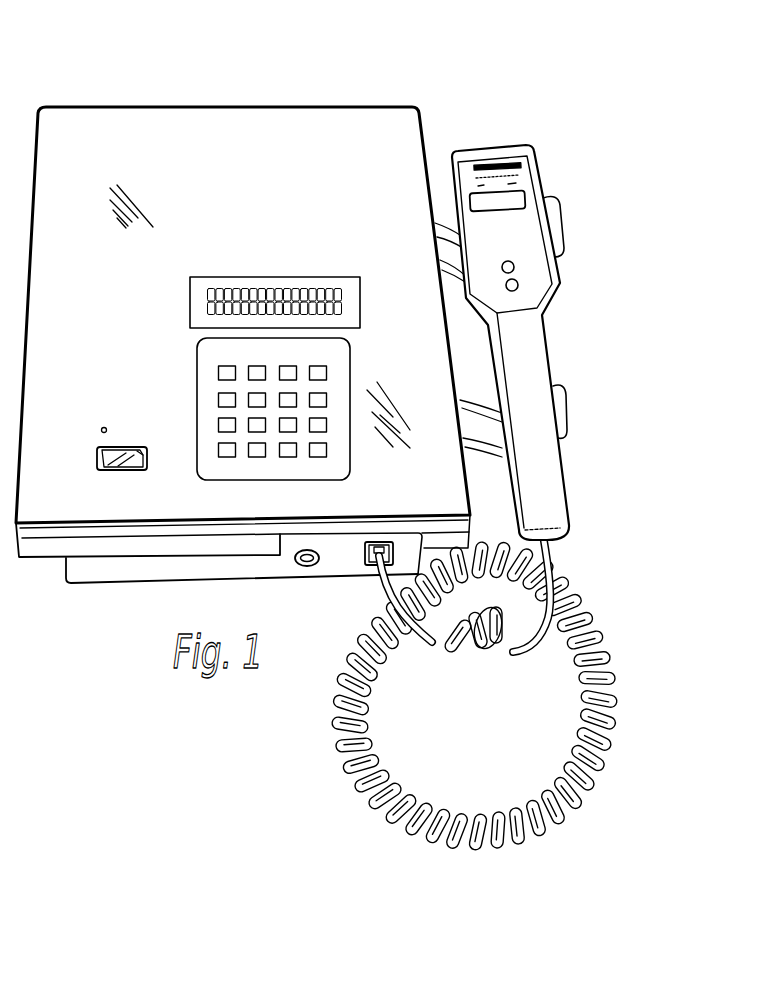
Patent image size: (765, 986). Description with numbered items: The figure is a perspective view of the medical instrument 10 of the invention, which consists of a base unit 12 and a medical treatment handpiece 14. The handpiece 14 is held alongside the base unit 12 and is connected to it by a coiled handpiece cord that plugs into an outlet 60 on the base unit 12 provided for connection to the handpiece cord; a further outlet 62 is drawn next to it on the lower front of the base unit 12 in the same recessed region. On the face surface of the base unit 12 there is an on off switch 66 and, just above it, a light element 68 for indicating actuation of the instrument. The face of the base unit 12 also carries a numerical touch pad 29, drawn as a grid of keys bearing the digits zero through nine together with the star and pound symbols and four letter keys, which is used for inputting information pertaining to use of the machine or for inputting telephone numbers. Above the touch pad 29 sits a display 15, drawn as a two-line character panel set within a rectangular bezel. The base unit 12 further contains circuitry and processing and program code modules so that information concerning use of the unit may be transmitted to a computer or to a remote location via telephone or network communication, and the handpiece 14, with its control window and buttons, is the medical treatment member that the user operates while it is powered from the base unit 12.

The medical instrument 10 is at (363, 95).
The base unit 12 is at (276, 267).
The display 15 is at (207, 293).
The numerical touch pad 29 is at (337, 370).
The light element 68 is at (101, 427).
The on off switch 66 is at (140, 447).
The line jack 62 is at (308, 548).
The outlet 60 is at (381, 543).
The medical treatment handpiece 14 is at (549, 350).